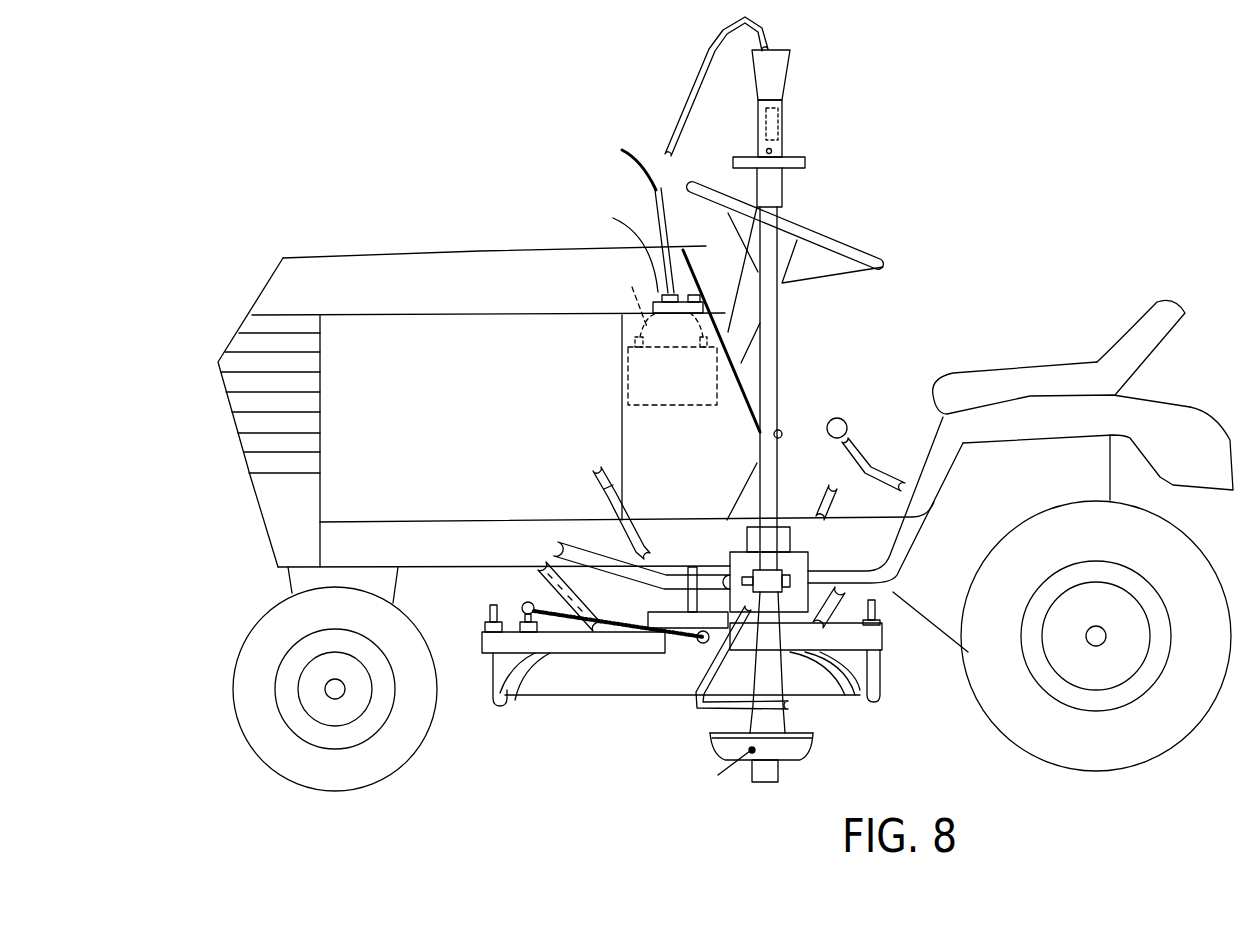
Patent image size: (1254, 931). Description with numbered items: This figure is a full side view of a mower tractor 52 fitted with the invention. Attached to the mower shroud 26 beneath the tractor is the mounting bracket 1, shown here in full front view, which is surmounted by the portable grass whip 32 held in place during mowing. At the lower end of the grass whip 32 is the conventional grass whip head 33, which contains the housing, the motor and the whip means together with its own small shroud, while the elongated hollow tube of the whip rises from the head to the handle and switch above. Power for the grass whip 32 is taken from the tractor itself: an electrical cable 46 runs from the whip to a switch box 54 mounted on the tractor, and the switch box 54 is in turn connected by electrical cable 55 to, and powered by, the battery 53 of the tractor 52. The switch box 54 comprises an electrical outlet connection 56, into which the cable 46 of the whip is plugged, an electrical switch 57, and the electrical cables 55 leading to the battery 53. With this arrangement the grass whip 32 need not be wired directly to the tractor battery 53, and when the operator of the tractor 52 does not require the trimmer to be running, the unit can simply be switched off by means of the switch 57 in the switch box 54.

The mounting bracket 1 is at (596, 706).
The shroud 26 is at (533, 678).
The grass whip 32 is at (794, 334).
The grass whip head 33 is at (832, 741).
The electrical cord 46 is at (660, 152).
The mower tractor 52 is at (418, 215).
The tractor battery 53 is at (668, 407).
The switch box 54 is at (686, 293).
The electrical cable 55 is at (632, 287).
The electrical outlet connection 56 is at (620, 249).
The electrical switch 57 is at (700, 295).